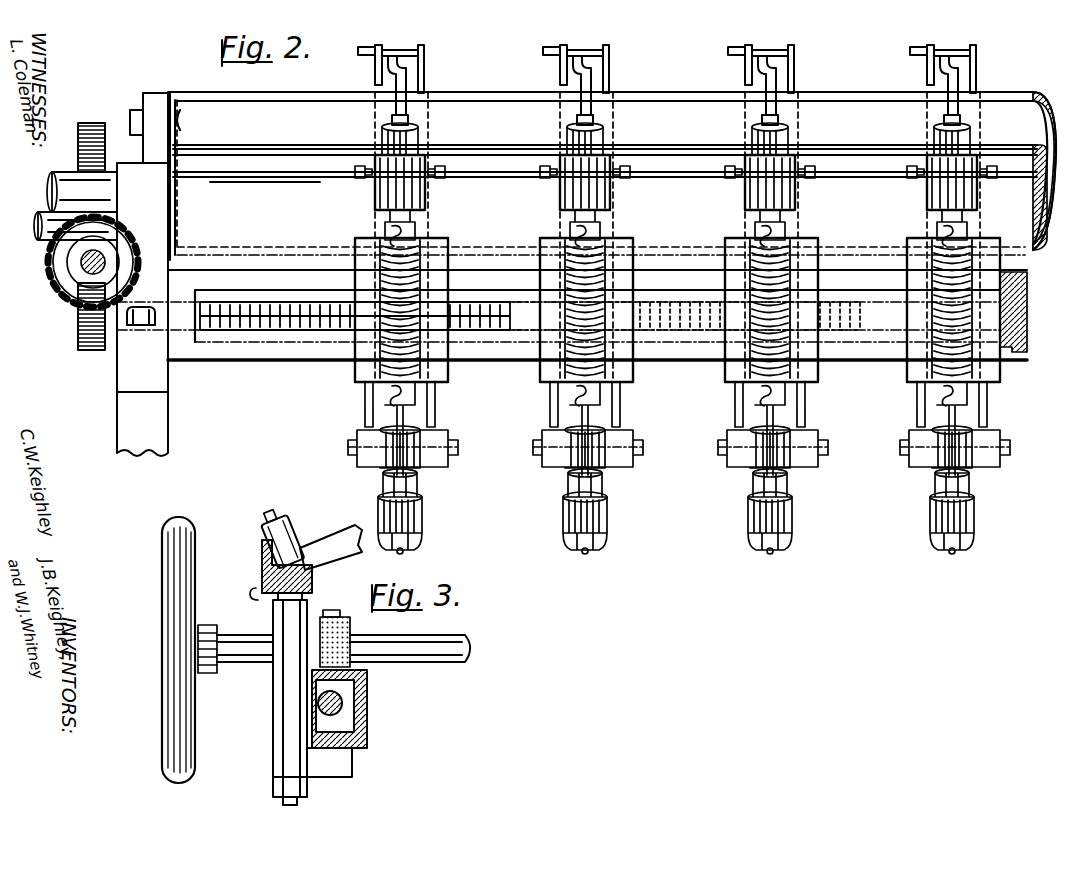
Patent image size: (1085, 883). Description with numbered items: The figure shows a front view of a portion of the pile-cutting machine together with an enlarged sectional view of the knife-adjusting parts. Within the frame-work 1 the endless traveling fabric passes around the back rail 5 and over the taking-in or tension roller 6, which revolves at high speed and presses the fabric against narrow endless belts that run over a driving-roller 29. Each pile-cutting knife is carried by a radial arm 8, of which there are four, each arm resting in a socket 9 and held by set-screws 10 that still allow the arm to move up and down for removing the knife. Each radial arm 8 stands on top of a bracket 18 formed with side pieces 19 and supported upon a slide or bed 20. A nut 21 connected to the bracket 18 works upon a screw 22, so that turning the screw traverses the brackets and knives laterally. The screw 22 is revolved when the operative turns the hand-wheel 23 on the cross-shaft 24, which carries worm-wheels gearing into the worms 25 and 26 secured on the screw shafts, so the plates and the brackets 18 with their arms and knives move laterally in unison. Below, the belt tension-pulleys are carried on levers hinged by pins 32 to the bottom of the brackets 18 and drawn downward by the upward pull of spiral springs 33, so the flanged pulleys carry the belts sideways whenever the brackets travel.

In FIG. 2, the frame-work 1 is at (142, 274).
In FIG. 2, the back rail 5 is at (299, 100).
In FIG. 2, the taking-in or tension roller 6 is at (228, 150).
In FIG. 2, the radial arm 8 is at (392, 58).
In FIG. 3, the radial arm 8 is at (331, 547).
In FIG. 2, the socket 9 is at (428, 192).
In FIG. 3, the socket 9 is at (262, 573).
In FIG. 2, the set-screws 10 is at (368, 177).
In FIG. 3, the set-screws 10 is at (312, 562).
In FIG. 2, the bracket 18 is at (358, 355).
In FIG. 3, the bracket 18 is at (275, 698).
In FIG. 3, the side pieces 19 is at (340, 766).
In FIG. 2, the slide or bed 20 is at (1015, 373).
In FIG. 3, the slide or bed 20 is at (366, 732).
In FIG. 3, the nut 21 is at (350, 715).
In FIG. 2, the screw 22 is at (292, 342).
In FIG. 3, the screw 22 is at (344, 702).
In FIG. 3, the hand-wheel 23 is at (162, 589).
In FIG. 2, the cross-shaft 24 is at (100, 258).
In FIG. 3, the cross-shaft 24 is at (425, 662).
In FIG. 2, the worm 25 is at (80, 322).
In FIG. 2, the worm 26 is at (93, 127).
In FIG. 2, the driving-roller 29 is at (255, 182).
In FIG. 2, the pins 32 is at (348, 447).
In FIG. 2, the spiral springs 33 is at (422, 285).